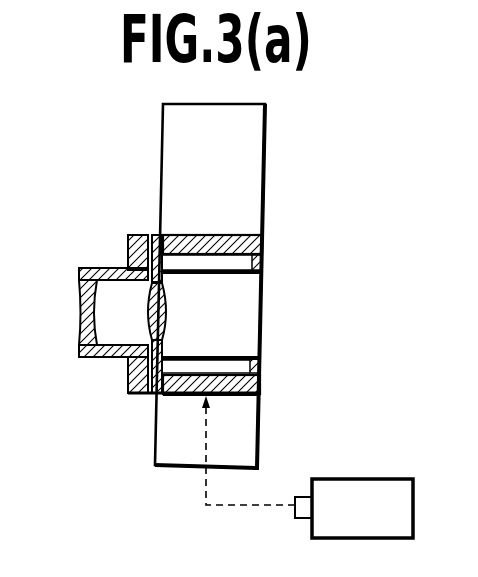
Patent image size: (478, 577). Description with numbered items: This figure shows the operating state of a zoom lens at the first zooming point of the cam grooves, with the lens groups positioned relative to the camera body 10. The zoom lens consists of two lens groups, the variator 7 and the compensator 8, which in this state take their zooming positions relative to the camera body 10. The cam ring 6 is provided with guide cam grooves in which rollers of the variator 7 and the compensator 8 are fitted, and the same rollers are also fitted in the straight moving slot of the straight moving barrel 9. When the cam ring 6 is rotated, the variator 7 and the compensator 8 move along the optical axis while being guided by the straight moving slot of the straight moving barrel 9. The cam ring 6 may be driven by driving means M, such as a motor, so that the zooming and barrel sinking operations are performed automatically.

The camera body 10 is at (262, 176).
The cam ring 6 is at (258, 247).
The straight moving barrel 9 is at (240, 277).
The compensator 8 is at (150, 305).
The variator 7 is at (80, 305).
The driving means M is at (368, 483).